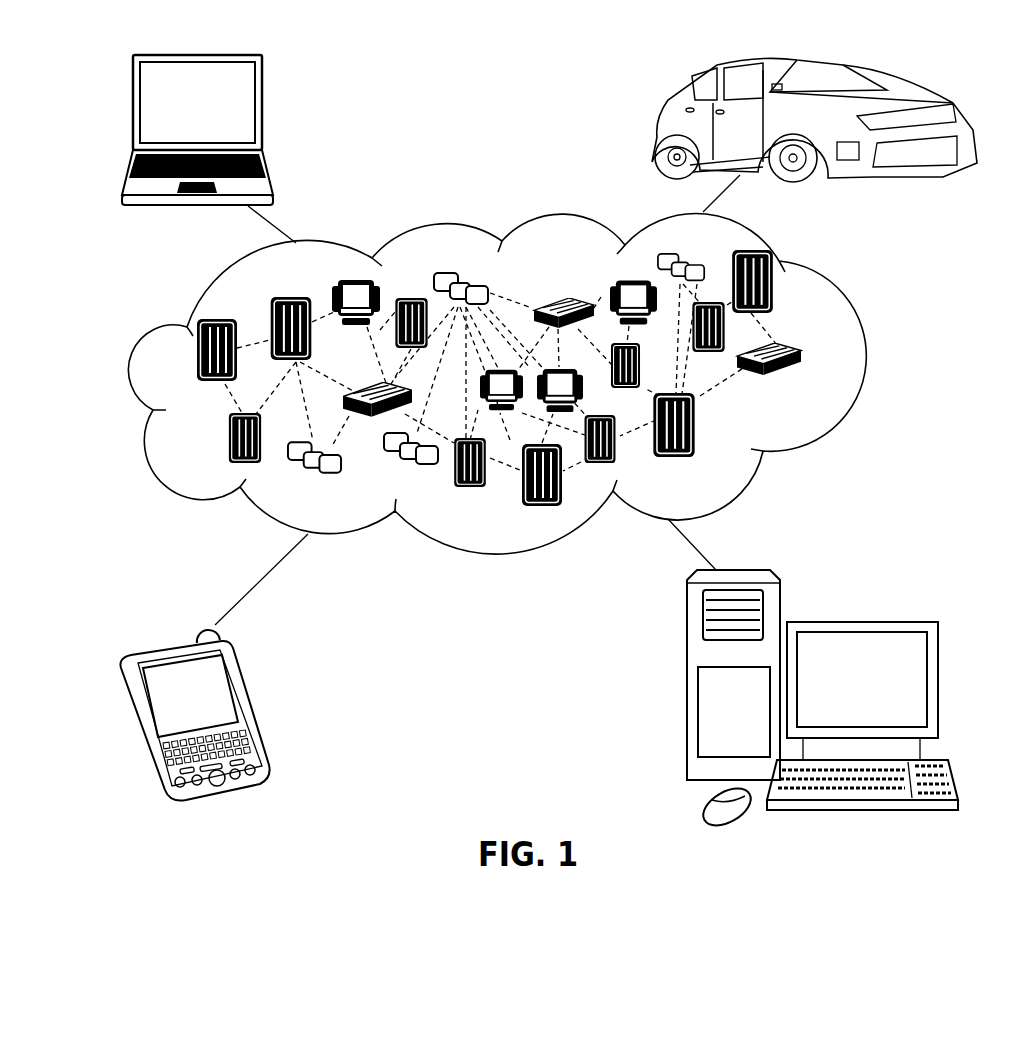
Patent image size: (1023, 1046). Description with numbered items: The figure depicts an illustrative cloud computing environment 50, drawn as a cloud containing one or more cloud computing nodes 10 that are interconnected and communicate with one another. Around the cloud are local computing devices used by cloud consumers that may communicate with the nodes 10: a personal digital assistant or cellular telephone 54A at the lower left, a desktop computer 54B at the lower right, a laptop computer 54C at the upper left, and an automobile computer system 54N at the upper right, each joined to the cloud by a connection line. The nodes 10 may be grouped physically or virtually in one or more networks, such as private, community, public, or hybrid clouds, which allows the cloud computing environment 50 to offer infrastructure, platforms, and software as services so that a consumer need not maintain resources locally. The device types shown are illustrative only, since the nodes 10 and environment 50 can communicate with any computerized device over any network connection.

The cloud computing nodes 10 is at (807, 388).
The cloud computing environment 50 is at (861, 357).
The personal digital assistant or cellular telephone 54A is at (253, 707).
The desktop computer 54B is at (860, 620).
The laptop computer 54C is at (261, 113).
The automobile computer system 54N is at (657, 130).